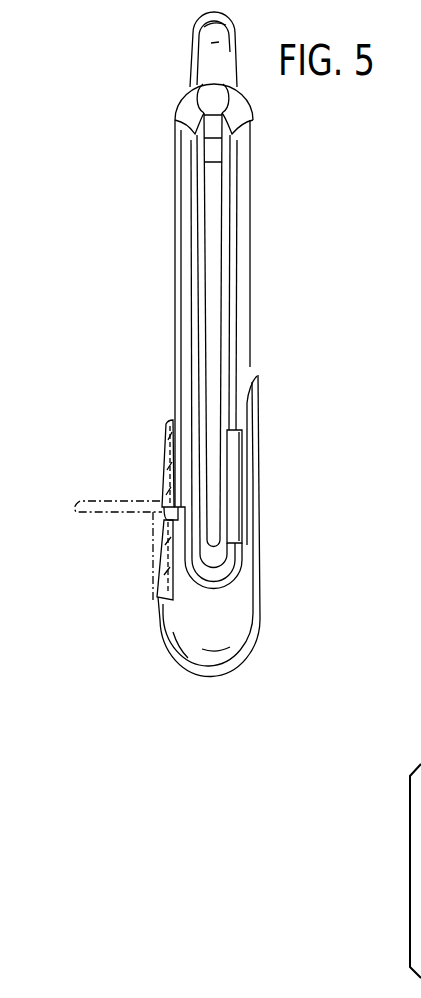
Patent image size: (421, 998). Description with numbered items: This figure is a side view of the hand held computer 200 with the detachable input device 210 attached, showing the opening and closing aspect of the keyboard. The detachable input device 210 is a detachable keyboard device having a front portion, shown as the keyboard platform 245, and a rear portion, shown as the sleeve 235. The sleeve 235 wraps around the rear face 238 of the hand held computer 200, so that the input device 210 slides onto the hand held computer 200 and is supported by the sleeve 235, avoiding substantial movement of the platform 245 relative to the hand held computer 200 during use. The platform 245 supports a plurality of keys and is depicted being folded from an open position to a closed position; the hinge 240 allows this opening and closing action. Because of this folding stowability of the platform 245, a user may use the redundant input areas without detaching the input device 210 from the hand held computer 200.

The hand held computer 200 is at (190, 393).
The rear face 238 is at (252, 231).
The sleeve portion 235 is at (253, 437).
The keyboard platform 245 is at (162, 458).
The hinge 240 is at (156, 509).
The detachable input device 210 is at (232, 698).